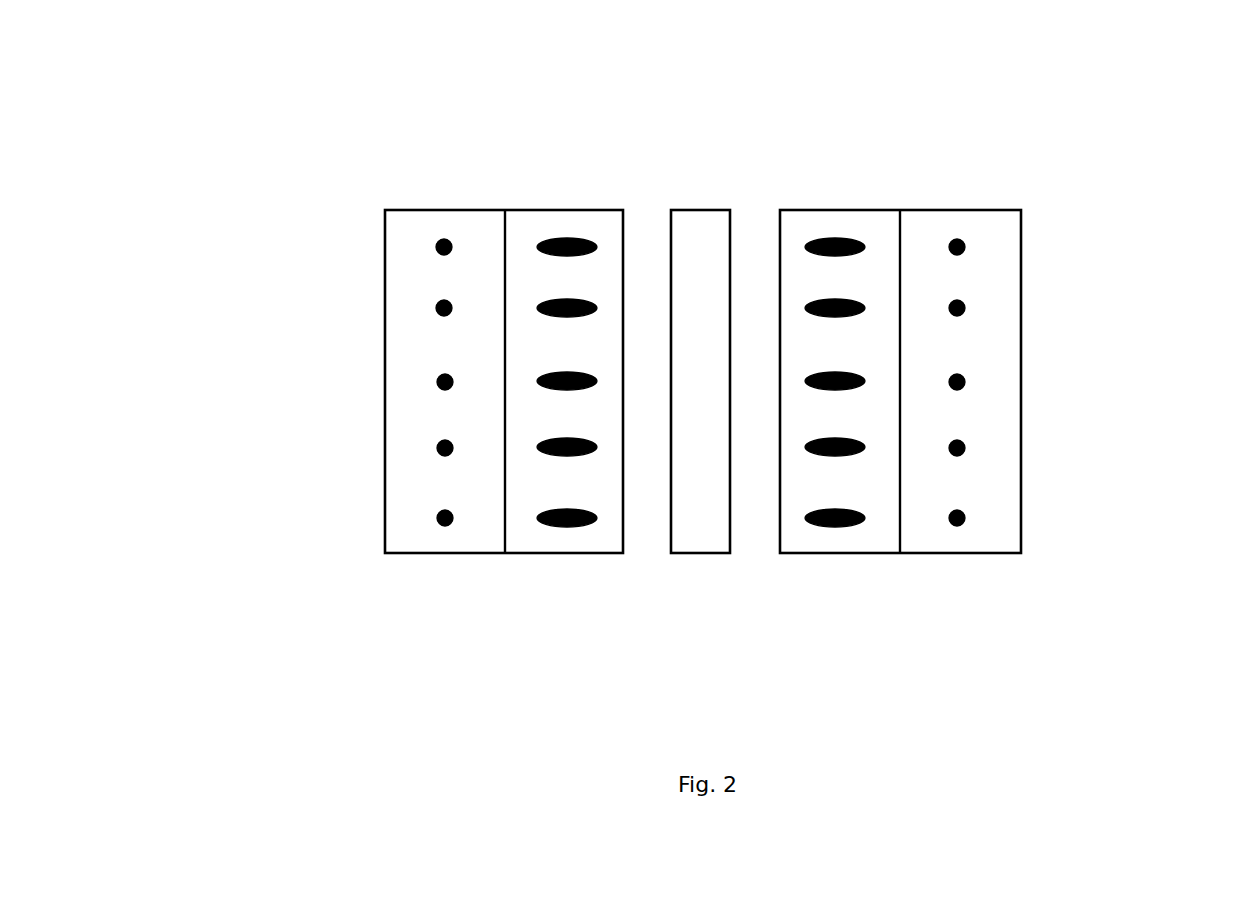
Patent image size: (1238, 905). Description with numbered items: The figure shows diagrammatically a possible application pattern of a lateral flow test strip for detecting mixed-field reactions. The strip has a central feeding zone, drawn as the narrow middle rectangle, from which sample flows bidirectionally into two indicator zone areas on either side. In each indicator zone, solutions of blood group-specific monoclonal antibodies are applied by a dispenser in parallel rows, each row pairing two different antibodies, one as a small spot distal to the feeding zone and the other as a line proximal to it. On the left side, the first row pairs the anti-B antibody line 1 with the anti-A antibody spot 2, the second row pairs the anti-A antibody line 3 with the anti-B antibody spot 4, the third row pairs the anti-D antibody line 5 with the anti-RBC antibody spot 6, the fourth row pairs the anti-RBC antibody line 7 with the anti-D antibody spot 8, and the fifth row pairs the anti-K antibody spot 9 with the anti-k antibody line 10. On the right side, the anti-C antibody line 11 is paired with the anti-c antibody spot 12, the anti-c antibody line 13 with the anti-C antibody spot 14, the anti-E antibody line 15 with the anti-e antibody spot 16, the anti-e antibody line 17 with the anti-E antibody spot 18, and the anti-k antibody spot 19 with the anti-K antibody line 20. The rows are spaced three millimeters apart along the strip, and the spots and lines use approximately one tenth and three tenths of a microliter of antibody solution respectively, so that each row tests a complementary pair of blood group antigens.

The anti-B antibody line 1 is at (548, 231).
The anti-A antibody spot 2 is at (437, 233).
The anti-A antibody line 3 is at (528, 300).
The anti-B antibody spot 4 is at (427, 300).
The anti-D antibody line 5 is at (557, 362).
The anti-RBC antibody spot 6 is at (433, 392).
The anti-RBC antibody line 7 is at (538, 457).
The anti-D antibody spot 8 is at (433, 458).
The anti-K antibody spot 9 is at (433, 538).
The anti-k antibody line 10 is at (558, 539).
The anti-C antibody line 11 is at (825, 232).
The anti-c antibody spot 12 is at (968, 232).
The anti-c antibody line 13 is at (843, 290).
The anti-C antibody spot 14 is at (970, 312).
The anti-E antibody line 15 is at (862, 373).
The anti-e antibody spot 16 is at (978, 385).
The anti-e antibody line 17 is at (852, 458).
The anti-E antibody spot 18 is at (978, 458).
The anti-k antibody spot 19 is at (970, 530).
The anti-K antibody line 20 is at (853, 530).